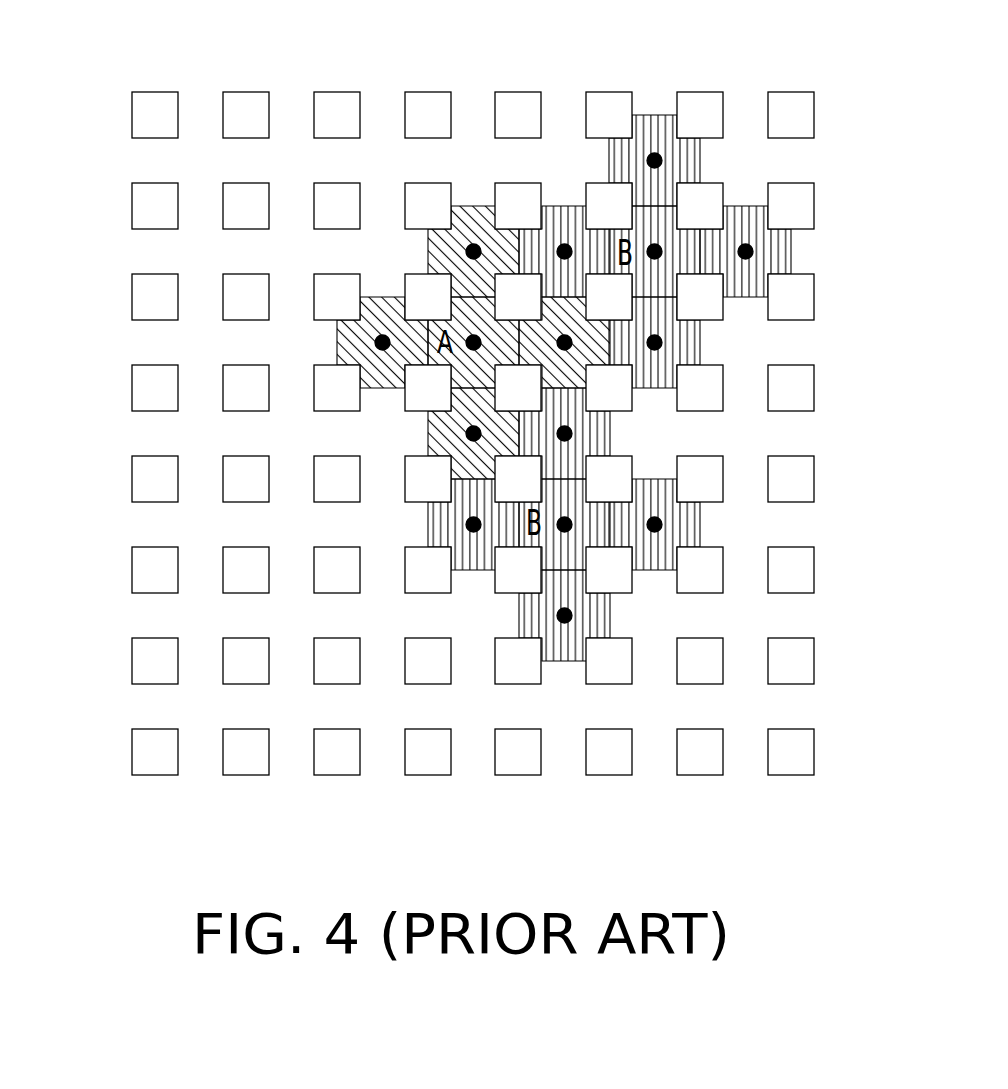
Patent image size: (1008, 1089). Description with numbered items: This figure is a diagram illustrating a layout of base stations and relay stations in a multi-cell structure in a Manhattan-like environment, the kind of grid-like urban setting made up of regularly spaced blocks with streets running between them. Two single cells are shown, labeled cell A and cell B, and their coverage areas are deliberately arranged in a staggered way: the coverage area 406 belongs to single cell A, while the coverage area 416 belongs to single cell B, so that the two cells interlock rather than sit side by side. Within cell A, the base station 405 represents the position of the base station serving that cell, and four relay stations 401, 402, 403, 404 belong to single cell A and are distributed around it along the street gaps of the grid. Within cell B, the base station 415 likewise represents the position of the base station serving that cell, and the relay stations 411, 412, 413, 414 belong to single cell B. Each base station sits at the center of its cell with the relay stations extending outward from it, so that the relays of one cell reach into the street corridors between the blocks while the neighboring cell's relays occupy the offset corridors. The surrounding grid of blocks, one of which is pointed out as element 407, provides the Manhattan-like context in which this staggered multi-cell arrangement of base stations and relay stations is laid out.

The relay station 401 is at (473, 251).
The relay station 402 is at (565, 342).
The relay station 403 is at (473, 345).
The relay station 404 is at (382, 342).
The base station 405 is at (473, 433).
The coverage area 406 is at (483, 203).
The electrode pad 407 is at (155, 113).
The relay station 411 is at (654, 160).
The relay station 412 is at (745, 251).
The relay station 413 is at (655, 342).
The relay station 414 is at (565, 251).
The base station 415 is at (656, 251).
The coverage area 416 is at (665, 112).